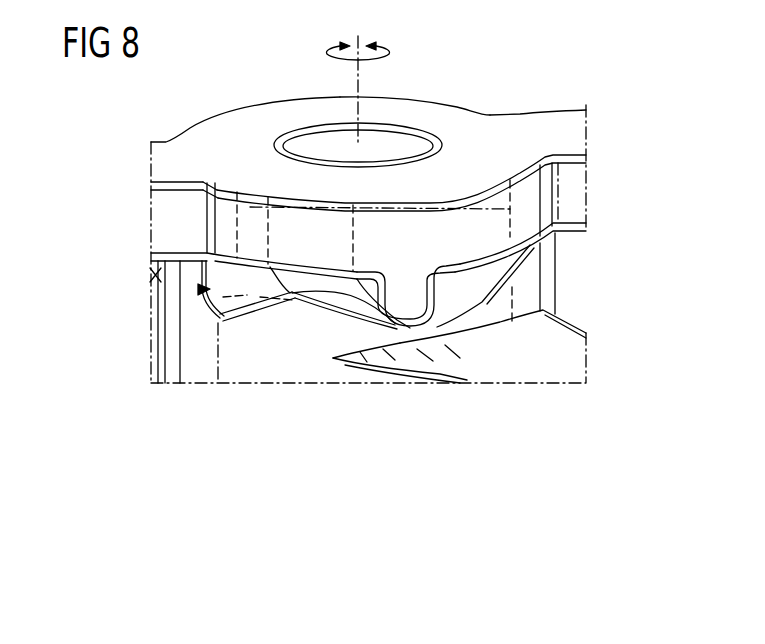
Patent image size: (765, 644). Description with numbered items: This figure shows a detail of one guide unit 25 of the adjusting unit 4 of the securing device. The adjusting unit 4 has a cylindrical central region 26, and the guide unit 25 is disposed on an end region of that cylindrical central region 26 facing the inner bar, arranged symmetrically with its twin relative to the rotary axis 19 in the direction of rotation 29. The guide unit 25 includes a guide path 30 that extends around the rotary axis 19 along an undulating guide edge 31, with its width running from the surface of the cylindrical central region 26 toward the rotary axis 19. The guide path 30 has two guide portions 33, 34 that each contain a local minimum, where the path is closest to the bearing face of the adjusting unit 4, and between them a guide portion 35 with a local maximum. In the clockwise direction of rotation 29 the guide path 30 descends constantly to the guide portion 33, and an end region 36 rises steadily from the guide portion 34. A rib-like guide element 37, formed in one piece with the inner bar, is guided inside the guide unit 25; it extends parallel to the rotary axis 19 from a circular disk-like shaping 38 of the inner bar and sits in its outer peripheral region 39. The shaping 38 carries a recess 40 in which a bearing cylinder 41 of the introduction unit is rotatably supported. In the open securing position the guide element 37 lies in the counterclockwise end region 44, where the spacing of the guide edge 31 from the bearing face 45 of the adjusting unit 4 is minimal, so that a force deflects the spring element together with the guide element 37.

The adjusting unit 4 is at (585, 310).
The rotary axis 19 is at (362, 74).
The guide unit 25 is at (197, 289).
The cylindrical central region 26 is at (268, 356).
The direction of rotation 29 is at (388, 50).
The guide path 30 is at (223, 302).
The guide edge 31 is at (483, 297).
The guide portion 33 is at (408, 326).
The guide portion 34 is at (215, 321).
The guide portion 35 is at (293, 300).
The end region 36 is at (160, 279).
The guide element 37 is at (440, 282).
The circular disk-like shaping 38 is at (452, 117).
The outer peripheral region 39 is at (482, 112).
The recess 40 is at (296, 129).
The bearing cylinder 41 is at (321, 138).
The end region 44 is at (519, 265).
The bearing face 45 is at (229, 133).